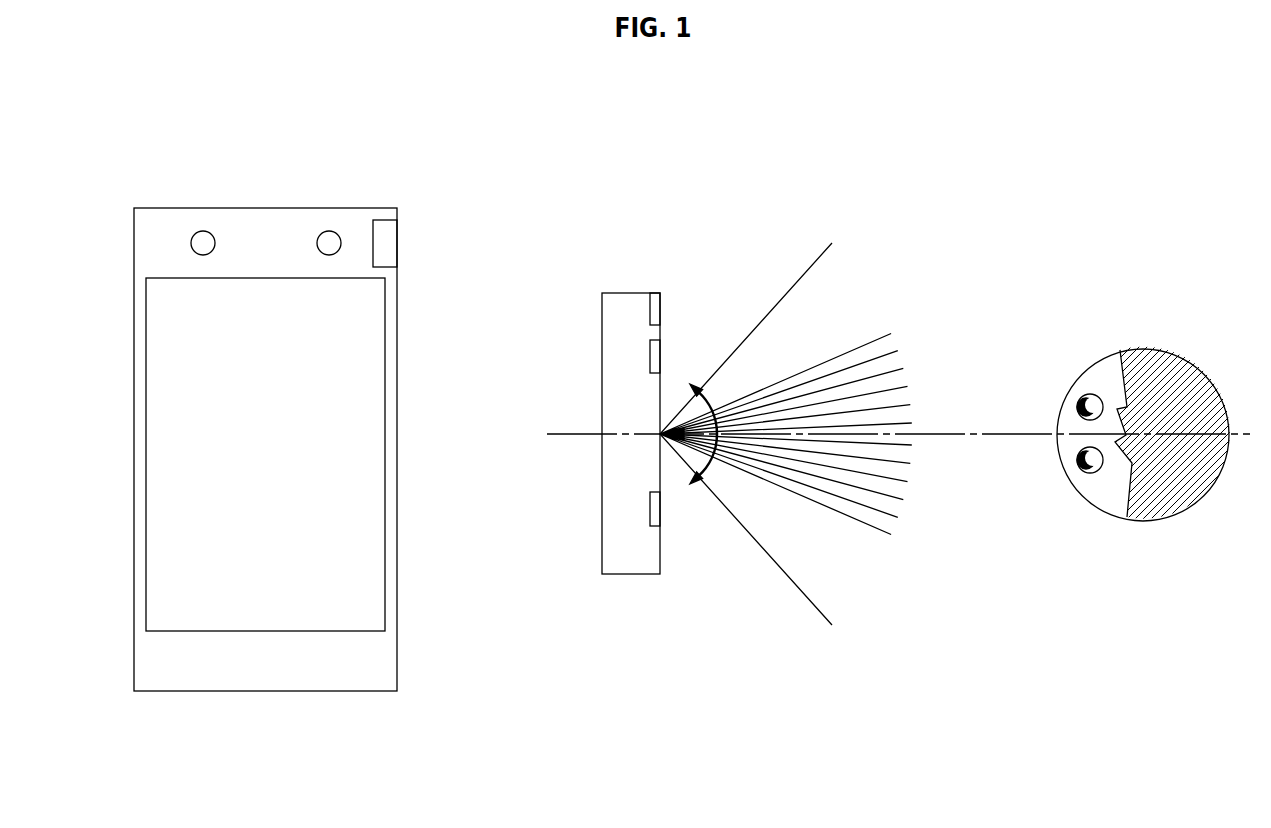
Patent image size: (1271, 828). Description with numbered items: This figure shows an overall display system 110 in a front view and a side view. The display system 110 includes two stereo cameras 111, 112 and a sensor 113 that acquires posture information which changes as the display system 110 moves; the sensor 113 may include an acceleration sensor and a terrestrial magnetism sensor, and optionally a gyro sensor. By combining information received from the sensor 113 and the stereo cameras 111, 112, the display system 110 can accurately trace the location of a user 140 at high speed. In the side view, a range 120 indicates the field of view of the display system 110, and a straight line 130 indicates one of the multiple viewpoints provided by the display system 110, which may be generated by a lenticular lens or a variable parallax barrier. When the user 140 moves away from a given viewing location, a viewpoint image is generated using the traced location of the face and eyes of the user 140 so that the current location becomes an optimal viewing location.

The display system 110 is at (396, 667).
The stereo camera 111 is at (201, 231).
The stereo camera 112 is at (327, 231).
The sensor 113 is at (385, 220).
The range 120 is at (717, 430).
The straight line 130 is at (843, 353).
The user 140 is at (1138, 347).